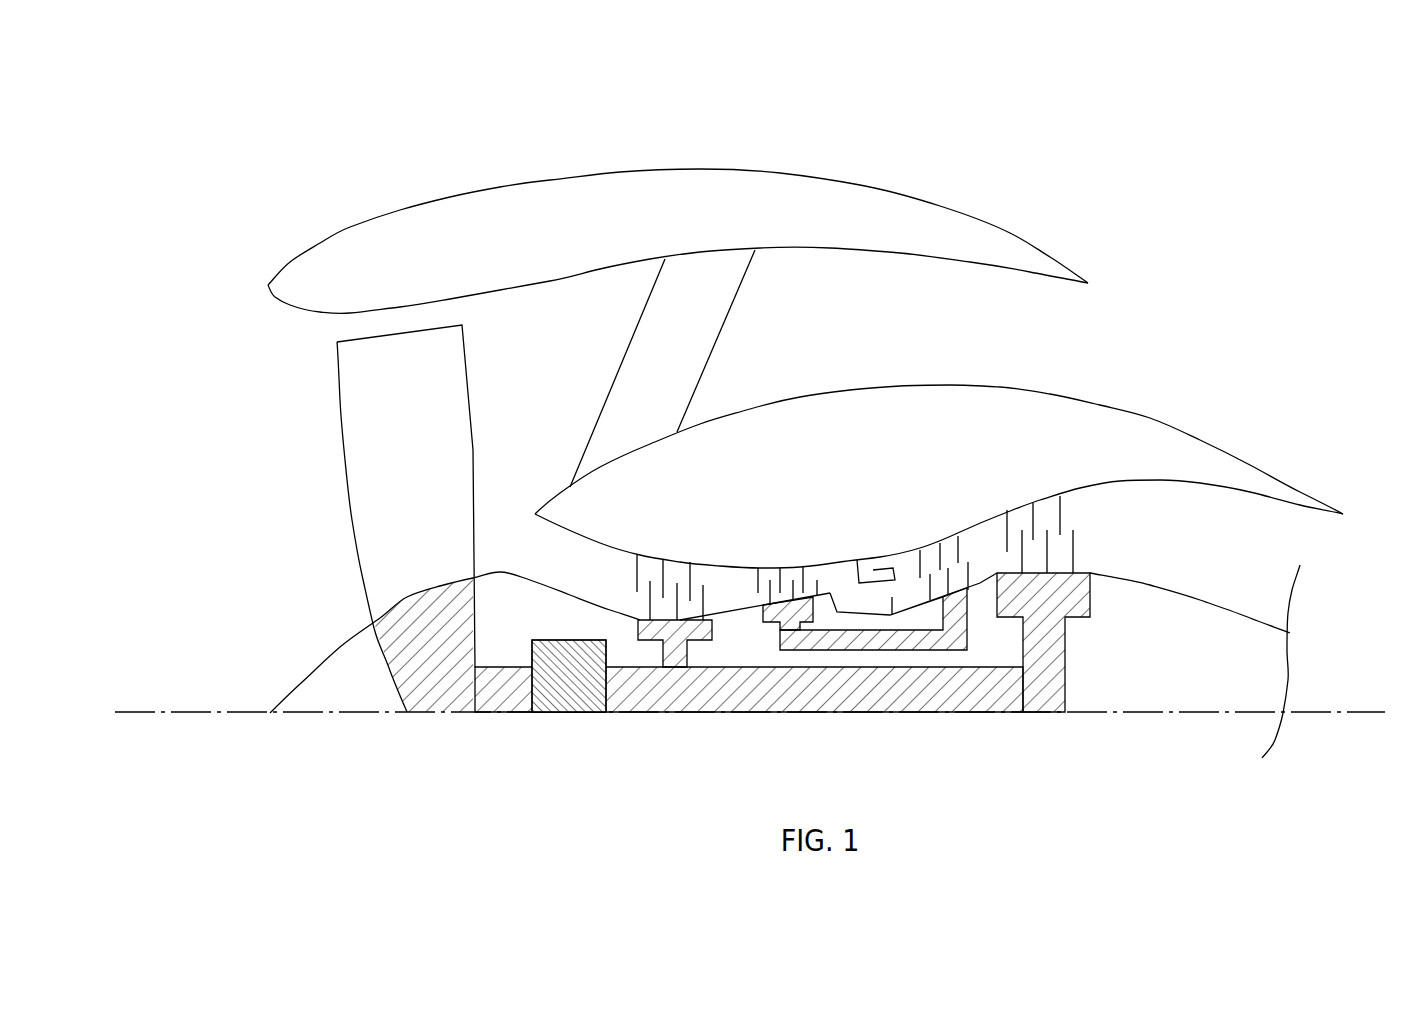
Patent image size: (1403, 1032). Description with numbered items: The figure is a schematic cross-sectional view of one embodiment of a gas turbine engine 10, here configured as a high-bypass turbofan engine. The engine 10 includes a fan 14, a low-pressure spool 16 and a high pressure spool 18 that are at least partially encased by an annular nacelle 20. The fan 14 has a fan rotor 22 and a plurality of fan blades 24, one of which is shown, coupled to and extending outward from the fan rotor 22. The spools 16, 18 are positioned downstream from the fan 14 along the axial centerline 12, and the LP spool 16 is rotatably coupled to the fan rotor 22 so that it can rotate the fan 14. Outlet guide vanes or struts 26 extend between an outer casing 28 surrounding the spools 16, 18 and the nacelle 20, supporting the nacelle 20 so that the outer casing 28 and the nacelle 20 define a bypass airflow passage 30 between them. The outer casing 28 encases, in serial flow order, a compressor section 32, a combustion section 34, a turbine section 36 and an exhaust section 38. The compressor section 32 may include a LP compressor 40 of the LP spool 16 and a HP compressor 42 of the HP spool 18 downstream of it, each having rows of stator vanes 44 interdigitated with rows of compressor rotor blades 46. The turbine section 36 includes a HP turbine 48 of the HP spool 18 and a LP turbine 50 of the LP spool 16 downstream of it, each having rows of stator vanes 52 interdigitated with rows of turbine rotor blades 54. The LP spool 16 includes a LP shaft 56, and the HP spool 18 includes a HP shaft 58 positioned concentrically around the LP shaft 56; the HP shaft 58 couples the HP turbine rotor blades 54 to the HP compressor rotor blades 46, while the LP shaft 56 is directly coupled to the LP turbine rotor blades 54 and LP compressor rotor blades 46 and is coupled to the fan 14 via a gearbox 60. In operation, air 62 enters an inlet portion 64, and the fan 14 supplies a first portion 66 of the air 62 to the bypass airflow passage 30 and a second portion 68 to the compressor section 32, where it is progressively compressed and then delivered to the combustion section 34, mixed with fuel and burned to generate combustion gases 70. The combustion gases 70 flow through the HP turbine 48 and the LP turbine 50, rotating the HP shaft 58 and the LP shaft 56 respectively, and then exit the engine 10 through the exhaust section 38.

The gas turbine engine 10 is at (307, 130).
The axial centerline 12 is at (1165, 714).
The fan 14 is at (320, 405).
The low-pressure (LP) spool 16 is at (668, 736).
The high pressure (HP) spool 18 is at (944, 668).
The annular nacelle 20 is at (362, 223).
The fan rotor 22 is at (338, 648).
The fan blades 24 is at (348, 503).
The outlet guide vanes or struts 26 is at (634, 333).
The outer casing 28 is at (1012, 392).
The bypass airflow passage 30 is at (806, 332).
The compressor section 32 is at (736, 520).
The combustion section 34 is at (862, 530).
The turbine section 36 is at (966, 500).
The exhaust section 38 is at (1269, 546).
The low-pressure (LP) compressor 40 is at (662, 536).
The high-pressure (HP) compressor 42 is at (782, 530).
The stator vanes 44 is at (637, 568).
The compressor rotor blades 46 is at (710, 578).
The high-pressure (HP) turbine 48 is at (931, 528).
The low-pressure (LP) turbine 50 is at (1046, 478).
The stator vanes 52 is at (1068, 505).
The turbine rotor blades 54 is at (1078, 543).
The low-pressure (LP) shaft 56 is at (778, 698).
The high pressure (HP) shaft 58 is at (925, 657).
The gearbox 60 is at (578, 693).
The air 62 is at (235, 572).
The inlet portion 64 is at (268, 325).
The first portion of the air 66 is at (570, 386).
The second portion of the air 68 is at (575, 567).
The combustion gases 70 is at (922, 560).